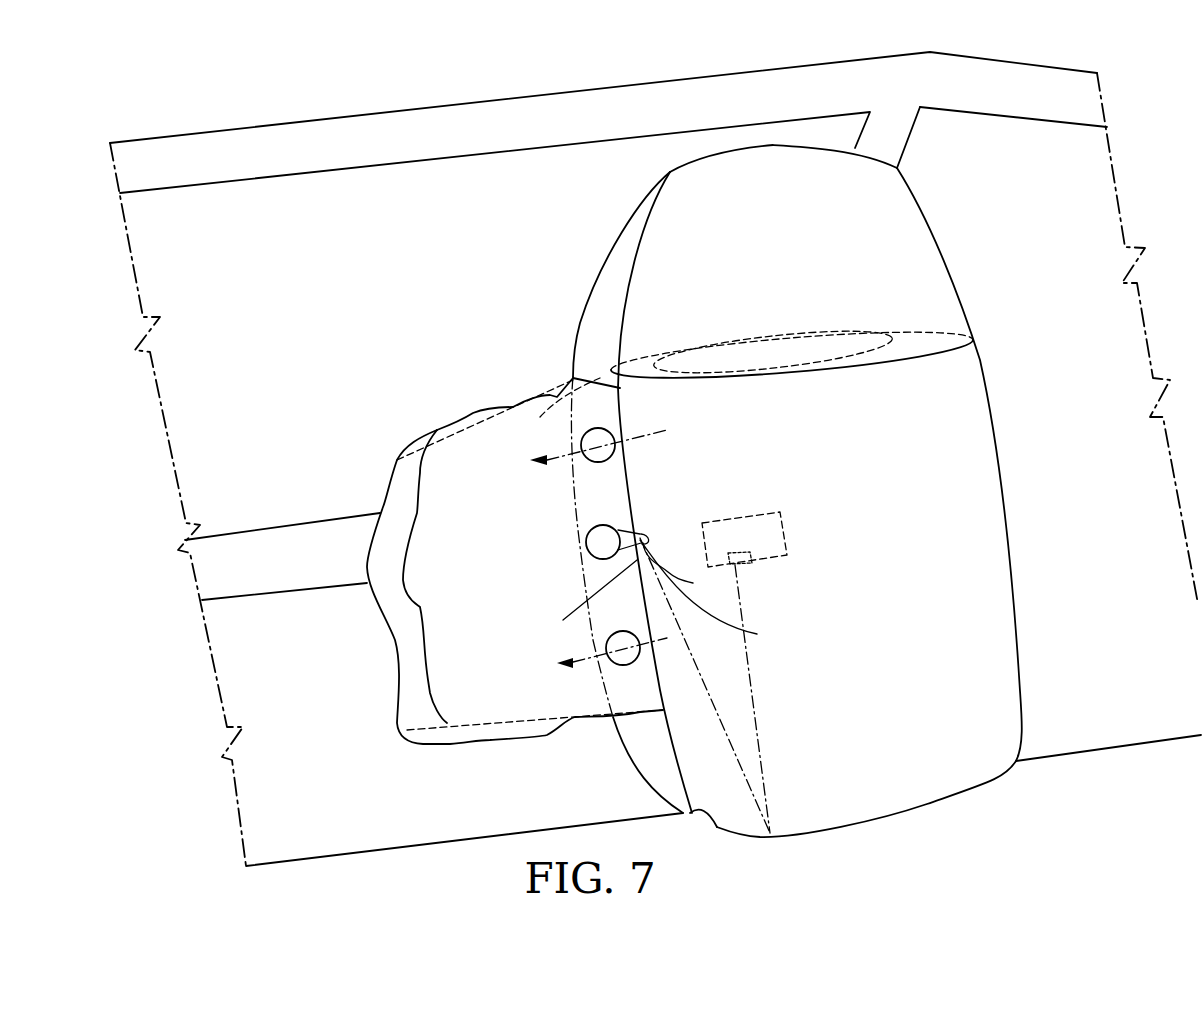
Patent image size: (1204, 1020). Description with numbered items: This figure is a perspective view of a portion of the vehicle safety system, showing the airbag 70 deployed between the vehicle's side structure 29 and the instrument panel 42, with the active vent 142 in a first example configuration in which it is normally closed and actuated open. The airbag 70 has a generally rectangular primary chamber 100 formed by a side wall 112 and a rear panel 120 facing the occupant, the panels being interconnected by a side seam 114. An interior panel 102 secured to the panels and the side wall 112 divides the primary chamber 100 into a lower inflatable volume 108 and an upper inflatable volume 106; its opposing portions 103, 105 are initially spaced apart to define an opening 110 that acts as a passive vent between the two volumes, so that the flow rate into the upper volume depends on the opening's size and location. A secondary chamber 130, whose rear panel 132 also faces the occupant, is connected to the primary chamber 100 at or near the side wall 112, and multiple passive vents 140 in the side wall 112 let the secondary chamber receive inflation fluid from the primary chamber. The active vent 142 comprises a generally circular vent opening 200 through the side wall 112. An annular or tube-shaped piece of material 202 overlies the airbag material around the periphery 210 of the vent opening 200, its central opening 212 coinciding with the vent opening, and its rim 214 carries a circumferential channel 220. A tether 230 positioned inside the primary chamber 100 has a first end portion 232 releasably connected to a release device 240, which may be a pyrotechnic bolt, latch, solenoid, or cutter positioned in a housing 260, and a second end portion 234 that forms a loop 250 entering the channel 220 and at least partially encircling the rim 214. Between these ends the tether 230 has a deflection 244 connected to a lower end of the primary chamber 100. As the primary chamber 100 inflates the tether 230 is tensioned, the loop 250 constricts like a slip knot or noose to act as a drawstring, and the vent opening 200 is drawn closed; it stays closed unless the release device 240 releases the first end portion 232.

The side structure 29 is at (487, 126).
The airbag 70 is at (432, 230).
The instrument panel 42 is at (272, 553).
The primary chamber 100 is at (979, 546).
The upper inflatable volume 106 is at (906, 263).
The interior panel 102 is at (928, 343).
The opposing portion of the interior panel 103 is at (858, 363).
The opposing portion of the interior panel 105 is at (722, 340).
The opening 110 is at (778, 334).
The side wall 112 is at (603, 337).
The side seam 114 is at (713, 825).
The rear panel 120 is at (920, 730).
The lower inflatable volume 108 is at (966, 693).
The secondary chamber 130 is at (433, 517).
The rear panel of the secondary chamber 132 is at (442, 560).
The passive vent 140 is at (584, 432).
The active vent 142 is at (586, 572).
The vent opening 200 is at (587, 531).
The piece of material 202 is at (629, 528).
The periphery 210 is at (599, 560).
The central opening 212 is at (688, 569).
The rim 214 is at (602, 526).
The channel 220 is at (586, 546).
The tether 230 is at (764, 758).
The first end portion 232 is at (735, 565).
The second end portion 234 is at (757, 634).
The release device 240 is at (745, 552).
The deflection 244 is at (770, 834).
The loop 250 is at (575, 599).
The housing 260 is at (787, 531).